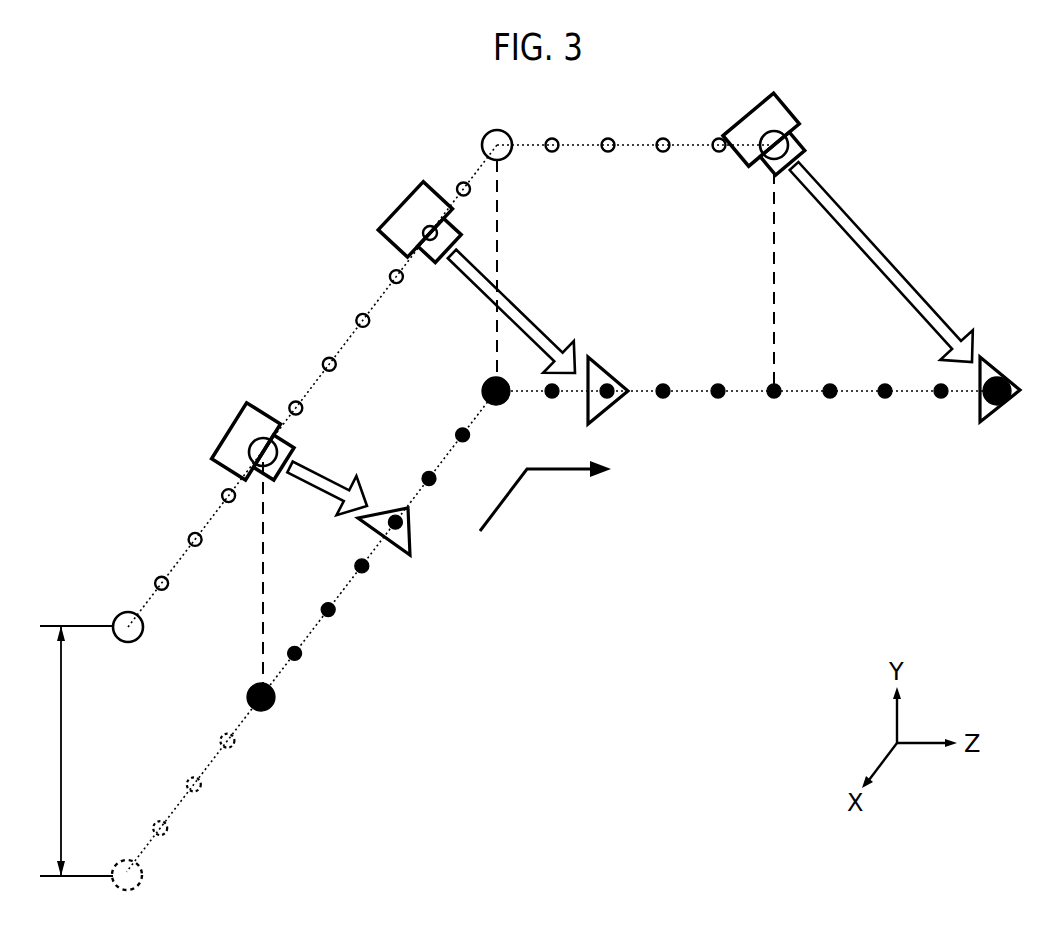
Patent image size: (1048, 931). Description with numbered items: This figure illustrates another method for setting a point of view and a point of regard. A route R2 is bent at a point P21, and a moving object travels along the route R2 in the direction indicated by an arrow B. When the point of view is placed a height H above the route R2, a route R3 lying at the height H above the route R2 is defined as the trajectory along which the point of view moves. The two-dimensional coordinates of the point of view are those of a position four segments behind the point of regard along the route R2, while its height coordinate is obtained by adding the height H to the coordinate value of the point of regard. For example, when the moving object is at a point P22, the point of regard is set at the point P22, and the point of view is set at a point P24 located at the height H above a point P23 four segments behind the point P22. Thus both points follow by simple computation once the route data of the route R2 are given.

The point P21 is at (486, 384).
The point P22 is at (424, 548).
The point P23 is at (274, 706).
The point P24 is at (224, 424).
The route R2 is at (307, 635).
The route R3 is at (352, 337).
The height H is at (76, 751).
The arrow B is at (538, 509).